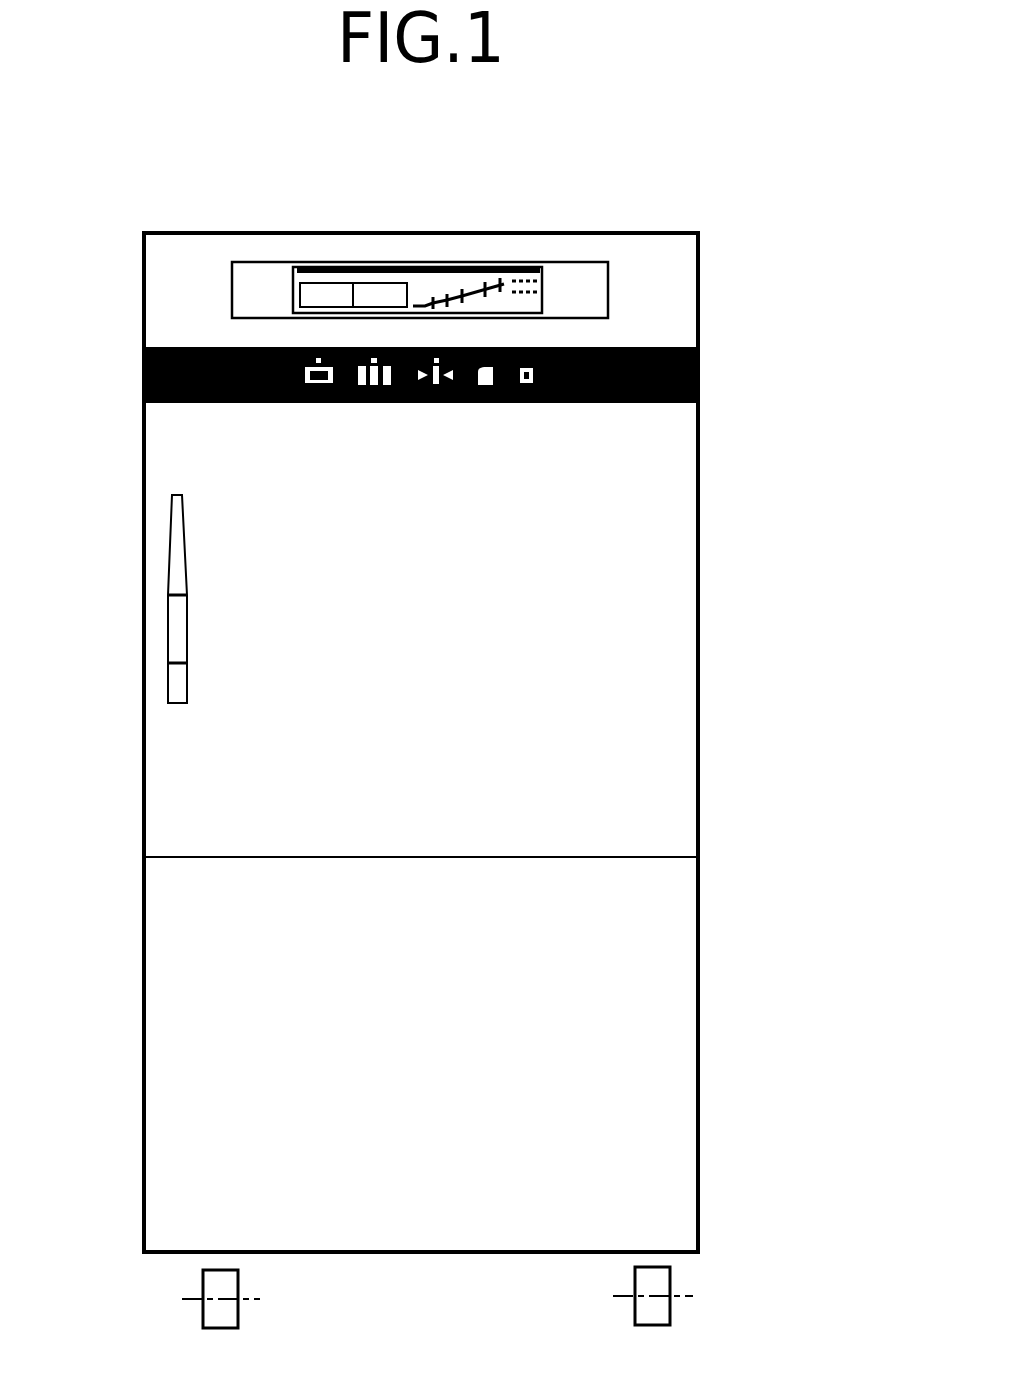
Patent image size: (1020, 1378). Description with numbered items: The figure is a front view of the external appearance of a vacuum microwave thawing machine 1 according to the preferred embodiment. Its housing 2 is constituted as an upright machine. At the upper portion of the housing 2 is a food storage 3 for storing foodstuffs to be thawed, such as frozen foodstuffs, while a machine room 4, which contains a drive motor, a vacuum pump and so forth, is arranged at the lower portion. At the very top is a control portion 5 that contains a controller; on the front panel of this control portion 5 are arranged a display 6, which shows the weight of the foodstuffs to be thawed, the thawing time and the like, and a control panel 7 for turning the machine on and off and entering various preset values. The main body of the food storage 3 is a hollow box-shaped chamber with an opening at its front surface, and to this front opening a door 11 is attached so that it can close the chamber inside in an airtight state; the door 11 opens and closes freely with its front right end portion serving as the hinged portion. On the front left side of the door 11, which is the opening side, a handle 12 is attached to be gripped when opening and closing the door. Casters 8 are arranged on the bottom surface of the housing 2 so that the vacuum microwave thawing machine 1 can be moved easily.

The vacuum microwave thawing machine 1 is at (637, 216).
The housing 2 is at (716, 700).
The food storage 3 is at (655, 475).
The machine room 4 is at (655, 1040).
The control portion 5 is at (655, 294).
The display 6 is at (299, 288).
The control panel 7 is at (195, 346).
The casters 8 is at (658, 1313).
The door 11 is at (180, 768).
The handle 12 is at (168, 560).